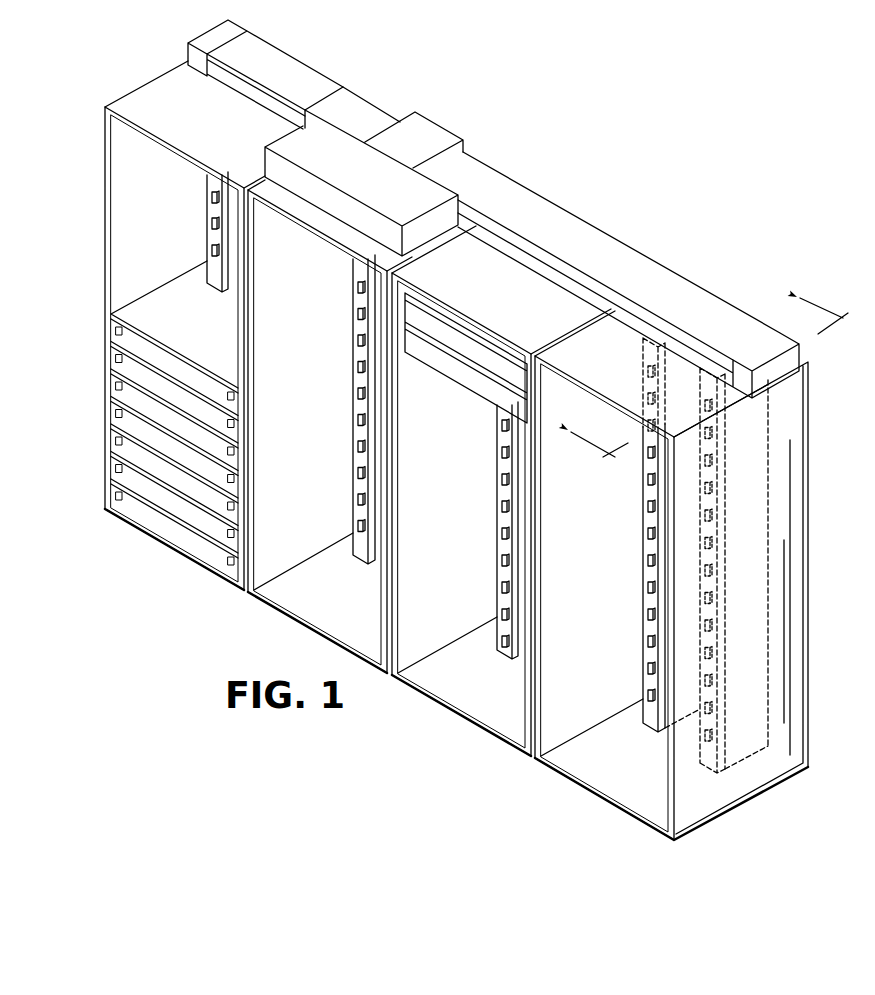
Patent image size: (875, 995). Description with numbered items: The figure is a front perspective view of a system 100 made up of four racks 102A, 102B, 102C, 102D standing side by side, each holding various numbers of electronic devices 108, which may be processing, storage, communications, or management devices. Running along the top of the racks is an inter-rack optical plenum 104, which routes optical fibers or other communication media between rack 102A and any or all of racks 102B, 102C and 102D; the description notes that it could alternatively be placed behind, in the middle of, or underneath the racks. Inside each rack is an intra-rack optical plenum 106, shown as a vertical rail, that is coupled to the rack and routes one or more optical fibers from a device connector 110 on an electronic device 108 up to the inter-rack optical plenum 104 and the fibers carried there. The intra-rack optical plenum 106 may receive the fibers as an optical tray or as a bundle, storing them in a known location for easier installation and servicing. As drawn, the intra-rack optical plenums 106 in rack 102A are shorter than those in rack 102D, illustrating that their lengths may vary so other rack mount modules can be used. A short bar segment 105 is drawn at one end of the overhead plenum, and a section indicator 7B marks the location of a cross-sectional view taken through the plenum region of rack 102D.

The system 100 is at (609, 156).
The rack 102A is at (167, 548).
The rack 102B is at (313, 632).
The rack 102C is at (458, 714).
The rack 102D is at (605, 799).
The inter-rack optical plenum 104 is at (667, 272).
The overhead bus bar 105 is at (296, 57).
The intra-rack optical plenum 106 is at (210, 288).
The electronic devices 108 is at (108, 358).
The device connector 110 is at (208, 214).
The section view indicator 7B is at (716, 386).